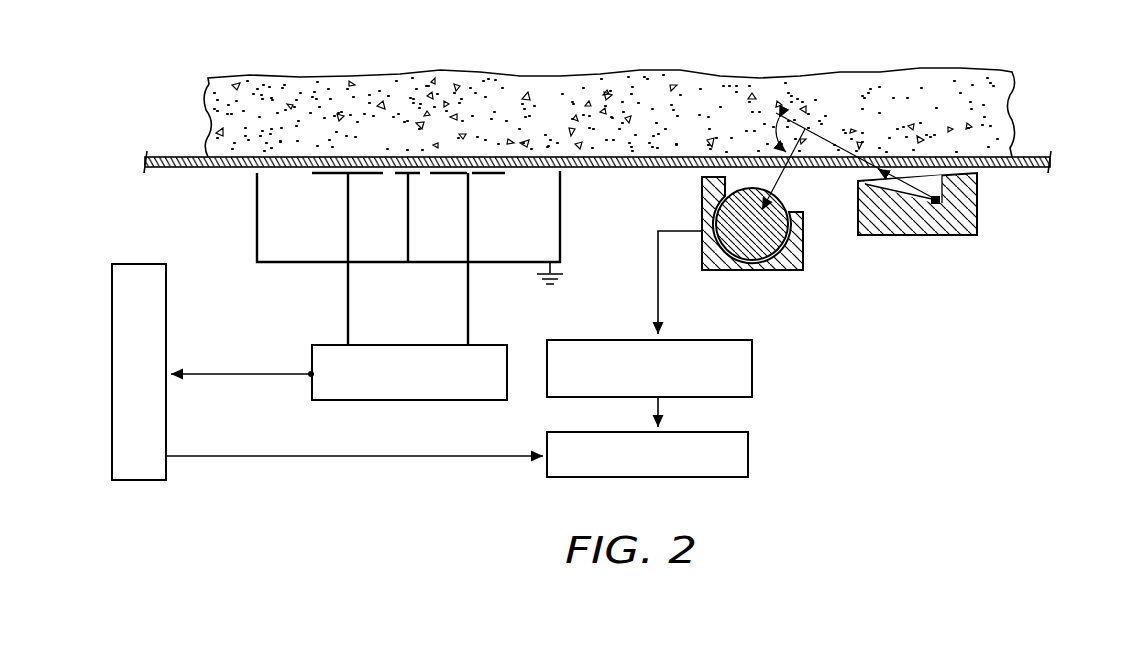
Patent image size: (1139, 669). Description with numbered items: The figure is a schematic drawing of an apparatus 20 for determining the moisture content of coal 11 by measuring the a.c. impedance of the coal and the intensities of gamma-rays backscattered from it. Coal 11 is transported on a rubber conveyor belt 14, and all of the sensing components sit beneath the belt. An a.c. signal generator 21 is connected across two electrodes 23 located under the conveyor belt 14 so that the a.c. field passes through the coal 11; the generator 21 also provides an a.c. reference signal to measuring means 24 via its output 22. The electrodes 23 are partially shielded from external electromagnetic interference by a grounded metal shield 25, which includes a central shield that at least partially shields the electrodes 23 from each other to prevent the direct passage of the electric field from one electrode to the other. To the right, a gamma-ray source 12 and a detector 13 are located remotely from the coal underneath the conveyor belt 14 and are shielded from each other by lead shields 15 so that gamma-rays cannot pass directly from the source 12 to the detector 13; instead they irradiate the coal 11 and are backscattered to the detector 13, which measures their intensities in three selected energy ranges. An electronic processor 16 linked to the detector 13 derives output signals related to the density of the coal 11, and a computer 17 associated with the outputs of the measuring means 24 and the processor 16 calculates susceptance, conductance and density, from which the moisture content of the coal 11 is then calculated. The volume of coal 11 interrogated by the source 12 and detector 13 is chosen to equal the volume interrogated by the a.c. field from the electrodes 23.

The apparatus 20 is at (226, 60).
The coal 11 is at (1008, 98).
The gamma-ray source 12 is at (940, 199).
The detector 13 is at (752, 245).
The conveyor belt 14 is at (1050, 170).
The lead shields 15 is at (803, 258).
The electronic processor 16 is at (745, 380).
The computer 17 is at (740, 462).
The a.c. signal generator 21 is at (415, 403).
The output 22 is at (305, 380).
The electrodes 23 is at (400, 174).
The measuring means 24 is at (157, 470).
The metal shield 25 is at (273, 263).